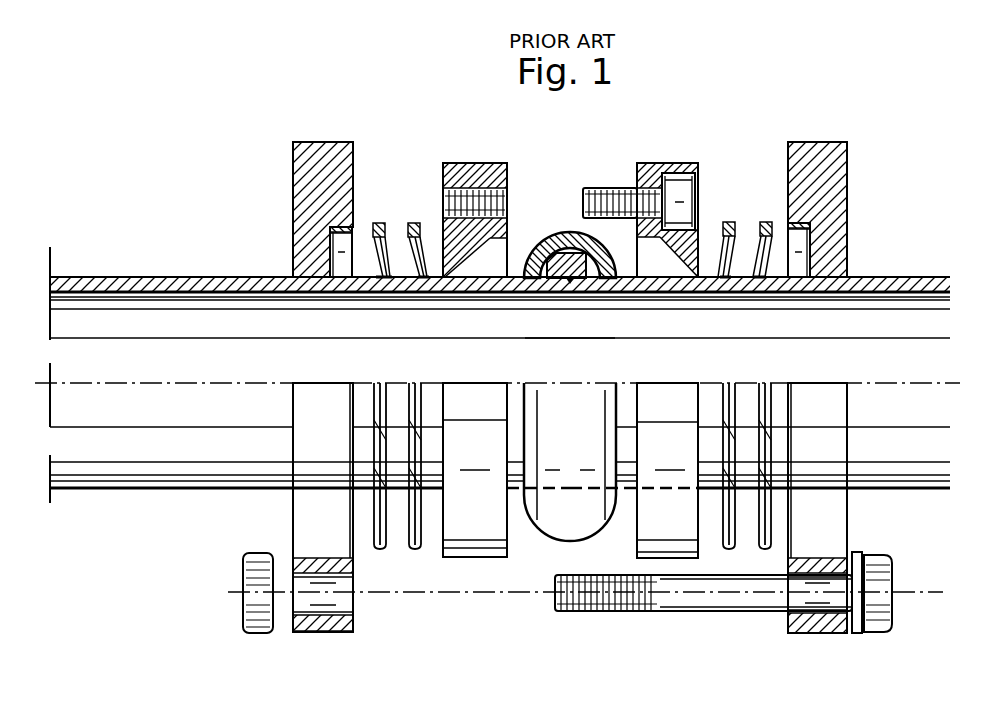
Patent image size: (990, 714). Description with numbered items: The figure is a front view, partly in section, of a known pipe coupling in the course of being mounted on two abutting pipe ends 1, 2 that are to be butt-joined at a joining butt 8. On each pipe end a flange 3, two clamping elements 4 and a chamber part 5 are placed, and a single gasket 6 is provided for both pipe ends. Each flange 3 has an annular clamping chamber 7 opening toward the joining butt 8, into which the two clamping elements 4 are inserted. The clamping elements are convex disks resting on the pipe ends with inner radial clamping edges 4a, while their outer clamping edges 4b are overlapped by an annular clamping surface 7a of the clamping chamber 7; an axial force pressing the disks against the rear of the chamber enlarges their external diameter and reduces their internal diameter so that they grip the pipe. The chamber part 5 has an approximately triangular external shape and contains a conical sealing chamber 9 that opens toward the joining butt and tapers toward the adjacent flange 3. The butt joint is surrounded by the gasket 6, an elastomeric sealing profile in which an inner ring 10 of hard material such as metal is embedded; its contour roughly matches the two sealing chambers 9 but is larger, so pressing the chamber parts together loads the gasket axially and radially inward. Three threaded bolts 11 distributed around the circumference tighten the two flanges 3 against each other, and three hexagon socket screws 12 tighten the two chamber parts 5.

The pipe end 1 is at (207, 312).
The pipe end 2 is at (882, 308).
The flange 3 is at (332, 142).
The clamping element 4 is at (388, 530).
The inner radial clamping edge 4a is at (418, 276).
The outer clamping edge 4b is at (413, 223).
The chamber part 5 is at (477, 163).
The gasket 6 is at (538, 256).
The clamping chamber 7 is at (340, 262).
The annular clamping surface 7a is at (333, 236).
The joining butt 8 is at (572, 342).
The sealing chamber 9 is at (480, 272).
The inner ring 10 is at (570, 520).
The threaded bolt 11 is at (715, 606).
The hexagon socket screw 12 is at (596, 186).